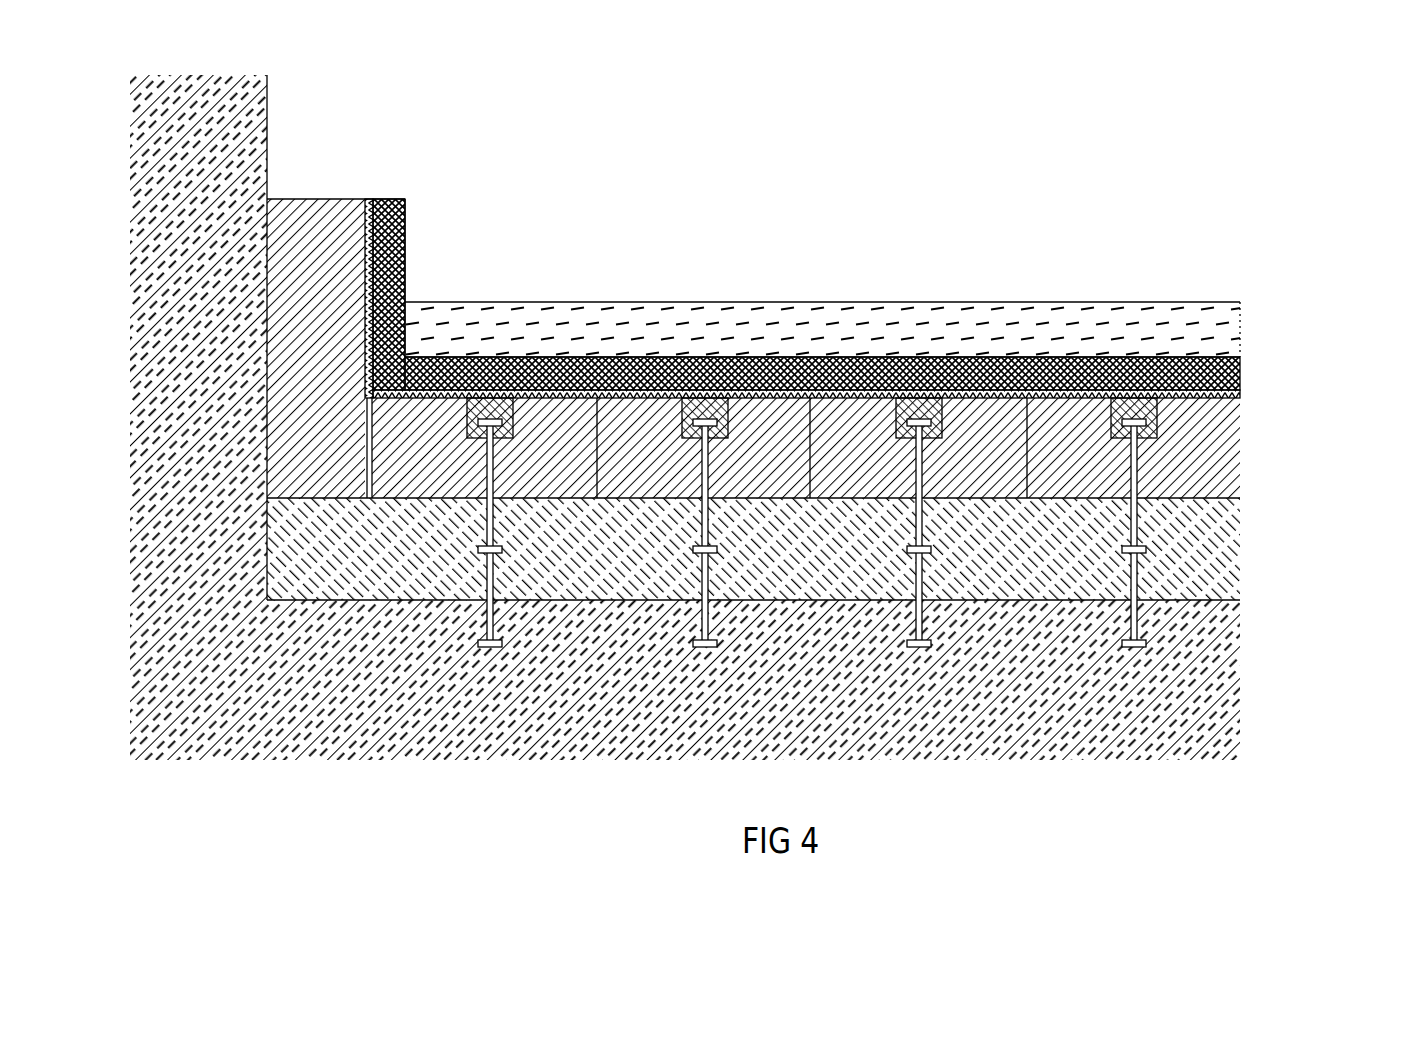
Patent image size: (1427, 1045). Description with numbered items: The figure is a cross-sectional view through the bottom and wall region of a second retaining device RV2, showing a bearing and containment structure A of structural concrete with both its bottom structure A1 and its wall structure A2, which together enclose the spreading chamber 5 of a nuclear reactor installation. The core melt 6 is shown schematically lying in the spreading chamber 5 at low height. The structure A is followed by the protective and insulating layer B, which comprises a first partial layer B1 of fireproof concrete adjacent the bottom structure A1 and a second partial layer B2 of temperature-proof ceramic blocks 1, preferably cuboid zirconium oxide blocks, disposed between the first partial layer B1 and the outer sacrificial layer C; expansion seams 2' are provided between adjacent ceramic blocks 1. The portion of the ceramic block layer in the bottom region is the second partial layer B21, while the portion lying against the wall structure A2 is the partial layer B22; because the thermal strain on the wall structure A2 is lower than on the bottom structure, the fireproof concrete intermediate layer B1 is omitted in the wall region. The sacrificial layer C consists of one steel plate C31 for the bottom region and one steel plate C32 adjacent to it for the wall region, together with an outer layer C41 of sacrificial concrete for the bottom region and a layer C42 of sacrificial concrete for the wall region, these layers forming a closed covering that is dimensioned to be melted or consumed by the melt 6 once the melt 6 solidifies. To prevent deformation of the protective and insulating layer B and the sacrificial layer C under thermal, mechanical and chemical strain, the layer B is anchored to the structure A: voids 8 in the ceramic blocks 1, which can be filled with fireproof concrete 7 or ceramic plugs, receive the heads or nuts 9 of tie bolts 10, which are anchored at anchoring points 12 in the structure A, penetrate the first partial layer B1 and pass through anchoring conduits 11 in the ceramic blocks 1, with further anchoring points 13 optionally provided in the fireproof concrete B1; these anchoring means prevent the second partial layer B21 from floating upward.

The bearing and containment structure A is at (1213, 737).
The bottom structure A1 is at (577, 715).
The wall structure A2 is at (188, 100).
The protective and insulating layer B is at (1360, 393).
The first partial layer B1 is at (1267, 497).
The second partial layer B2 is at (347, 458).
The second partial layer (bottom region) B21 is at (1267, 393).
The partial layer (wall region) B22 is at (333, 280).
The sacrificial layer C is at (405, 188).
The steel plate C31 is at (1243, 394).
The steel plate C32 is at (366, 199).
The outer layer of sacrificial concrete C41 is at (1243, 375).
The layer of sacrificial concrete C42 is at (405, 215).
The second retaining device RV2 is at (850, 210).
The ceramic blocks 1 is at (565, 402).
The expansion seams 2' is at (828, 365).
The spreading chamber 5 is at (522, 284).
The core melt 6 is at (643, 318).
The fireproof concrete 7 is at (928, 396).
The voids 8 is at (880, 398).
The heads or nuts 9 is at (1135, 418).
The tie bolts 10 is at (1243, 601).
The anchoring conduits 11 is at (753, 435).
The anchoring points 12 is at (699, 650).
The further anchoring points 13 is at (480, 553).